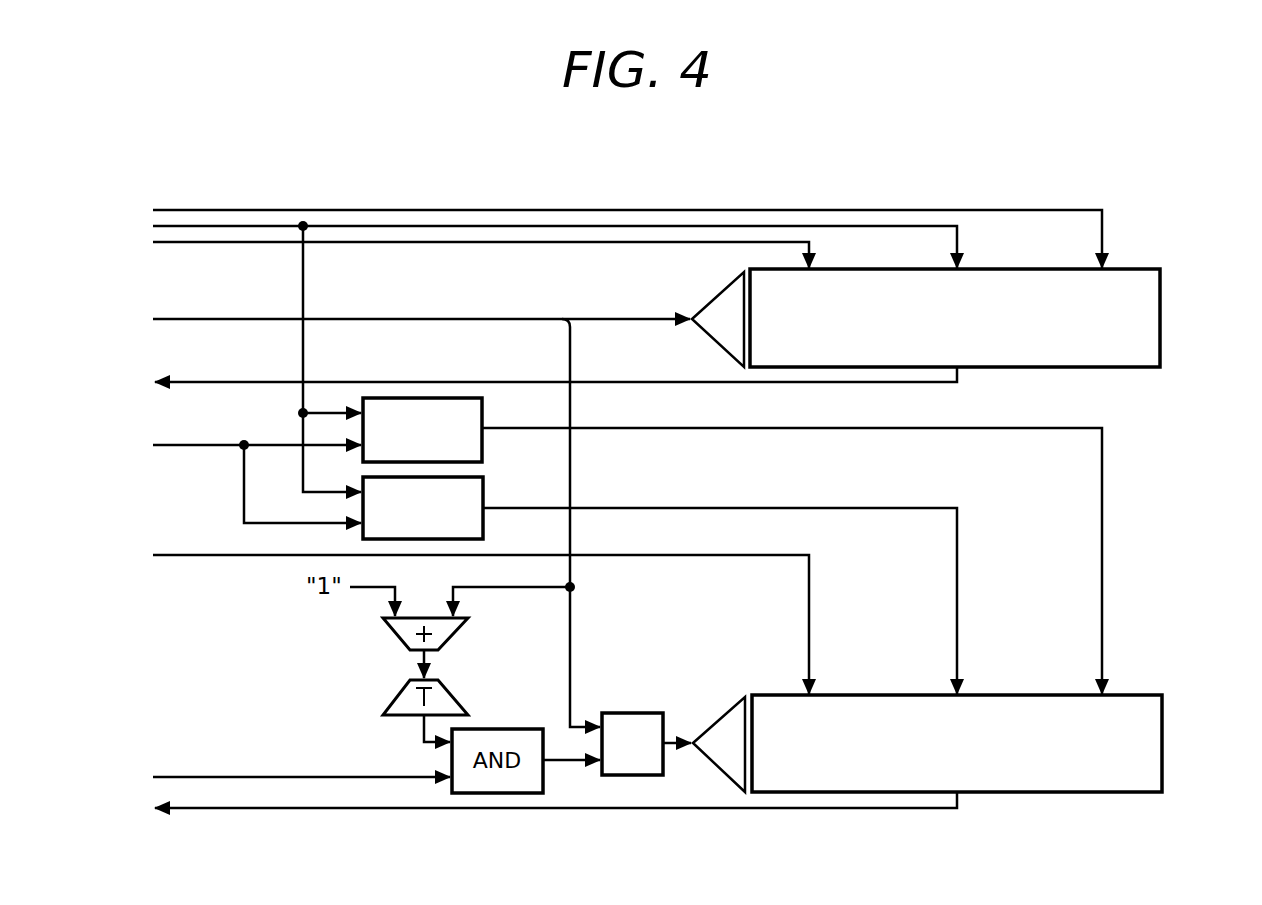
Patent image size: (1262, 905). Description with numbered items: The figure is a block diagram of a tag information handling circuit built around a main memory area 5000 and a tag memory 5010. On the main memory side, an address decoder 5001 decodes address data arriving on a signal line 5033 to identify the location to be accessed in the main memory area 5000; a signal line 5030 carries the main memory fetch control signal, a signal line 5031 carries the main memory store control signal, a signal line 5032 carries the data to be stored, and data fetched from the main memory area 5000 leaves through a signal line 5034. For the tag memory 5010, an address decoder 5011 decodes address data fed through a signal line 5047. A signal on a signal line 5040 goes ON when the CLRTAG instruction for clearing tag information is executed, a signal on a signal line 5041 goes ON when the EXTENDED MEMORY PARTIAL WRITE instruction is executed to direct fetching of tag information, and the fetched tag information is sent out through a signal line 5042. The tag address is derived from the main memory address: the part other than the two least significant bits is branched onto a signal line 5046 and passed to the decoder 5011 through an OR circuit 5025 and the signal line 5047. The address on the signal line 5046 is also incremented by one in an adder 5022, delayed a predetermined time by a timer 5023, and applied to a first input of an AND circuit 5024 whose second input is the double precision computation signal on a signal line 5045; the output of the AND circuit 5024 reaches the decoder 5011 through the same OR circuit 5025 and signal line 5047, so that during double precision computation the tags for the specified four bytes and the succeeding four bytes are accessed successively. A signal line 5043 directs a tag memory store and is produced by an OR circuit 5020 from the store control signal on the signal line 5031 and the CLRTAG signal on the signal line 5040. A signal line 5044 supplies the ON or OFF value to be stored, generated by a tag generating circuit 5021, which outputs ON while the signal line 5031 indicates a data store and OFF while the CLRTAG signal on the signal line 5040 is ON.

The main memory area 5000 is at (1162, 287).
The address decoder 5001 is at (704, 304).
The tag memory 5010 is at (1163, 713).
The address decoder 5011 is at (720, 706).
The OR circuit 5020 is at (496, 464).
The tag generating circuit 5021 is at (437, 398).
The adder 5022 is at (390, 635).
The timer 5023 is at (392, 693).
The AND circuit 5024 is at (428, 734).
The OR circuit 5025 is at (636, 713).
The signal line 5030 is at (364, 243).
The signal line 5031 is at (383, 225).
The signal line 5032 is at (514, 209).
The signal line 5033 is at (163, 318).
The signal line 5034 is at (164, 382).
The signal line 5040 is at (164, 445).
The signal line 5041 is at (164, 555).
The signal line 5042 is at (241, 810).
The signal line 5043 is at (905, 507).
The signal line 5044 is at (1104, 440).
The signal line 5045 is at (164, 777).
The signal line 5046 is at (572, 416).
The signal line 5047 is at (672, 748).